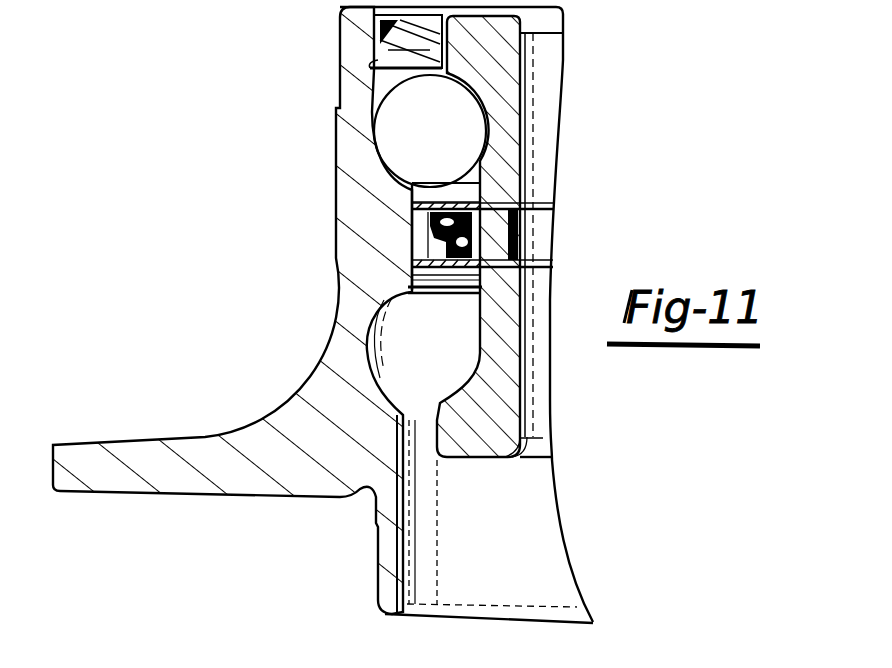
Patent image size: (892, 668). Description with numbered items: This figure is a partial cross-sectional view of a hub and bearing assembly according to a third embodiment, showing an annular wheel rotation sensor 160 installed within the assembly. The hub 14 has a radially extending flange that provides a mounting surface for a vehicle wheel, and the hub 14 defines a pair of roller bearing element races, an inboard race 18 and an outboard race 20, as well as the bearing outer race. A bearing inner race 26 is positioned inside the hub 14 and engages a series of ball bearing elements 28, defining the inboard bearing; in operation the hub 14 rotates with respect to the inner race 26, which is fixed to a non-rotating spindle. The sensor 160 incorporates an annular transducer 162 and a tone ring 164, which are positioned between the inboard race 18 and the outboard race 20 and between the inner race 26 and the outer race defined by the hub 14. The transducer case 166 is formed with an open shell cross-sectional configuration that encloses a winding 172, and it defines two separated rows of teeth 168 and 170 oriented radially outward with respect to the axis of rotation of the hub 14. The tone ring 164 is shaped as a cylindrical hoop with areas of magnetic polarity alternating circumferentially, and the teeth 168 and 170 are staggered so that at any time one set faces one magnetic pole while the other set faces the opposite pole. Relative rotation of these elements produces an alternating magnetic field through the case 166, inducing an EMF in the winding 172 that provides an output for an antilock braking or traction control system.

The hub 14 is at (150, 437).
The inboard race 18 is at (447, 125).
The outboard race 20 is at (420, 387).
The bearing inner race 26 is at (515, 399).
The ball bearing elements 28 is at (388, 91).
The sensor 160 is at (390, 213).
The annular transducer 162 is at (483, 199).
The tone ring 164 is at (412, 232).
The transducer case 166 is at (552, 283).
The teeth 168 is at (412, 196).
The teeth 170 is at (410, 288).
The winding 172 is at (412, 262).